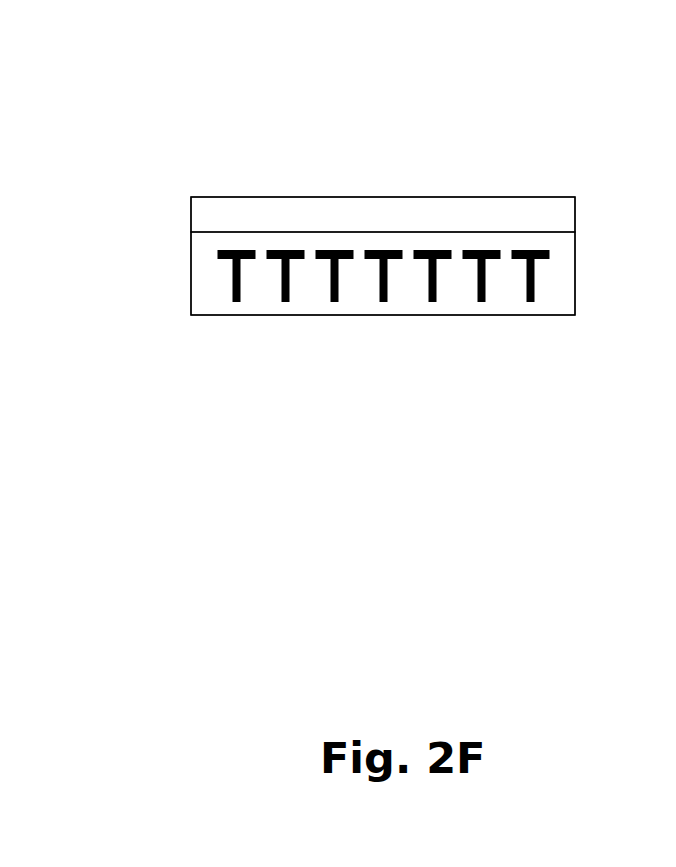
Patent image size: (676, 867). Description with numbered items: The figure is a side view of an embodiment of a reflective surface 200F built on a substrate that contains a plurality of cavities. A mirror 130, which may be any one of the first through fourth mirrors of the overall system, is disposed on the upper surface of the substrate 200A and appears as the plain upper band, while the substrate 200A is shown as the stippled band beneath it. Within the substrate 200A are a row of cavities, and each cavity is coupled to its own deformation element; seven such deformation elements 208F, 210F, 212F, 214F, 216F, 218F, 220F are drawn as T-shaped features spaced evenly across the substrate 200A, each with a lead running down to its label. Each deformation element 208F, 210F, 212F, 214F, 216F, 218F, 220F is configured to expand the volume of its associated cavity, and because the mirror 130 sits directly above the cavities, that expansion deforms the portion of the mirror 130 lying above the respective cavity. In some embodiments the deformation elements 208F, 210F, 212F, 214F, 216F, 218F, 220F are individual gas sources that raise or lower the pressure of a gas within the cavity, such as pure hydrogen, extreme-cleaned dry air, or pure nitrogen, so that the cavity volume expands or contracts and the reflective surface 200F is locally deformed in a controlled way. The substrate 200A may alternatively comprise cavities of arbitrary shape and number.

The reflective surface 200F is at (138, 90).
The mirror 130 is at (203, 219).
The substrate 200A is at (203, 289).
The deformation element 208F is at (236, 300).
The deformation element 210F is at (286, 300).
The deformation element 212F is at (334, 300).
The deformation element 214F is at (384, 300).
The deformation element 216F is at (432, 300).
The deformation element 218F is at (482, 300).
The deformation element 220F is at (530, 300).